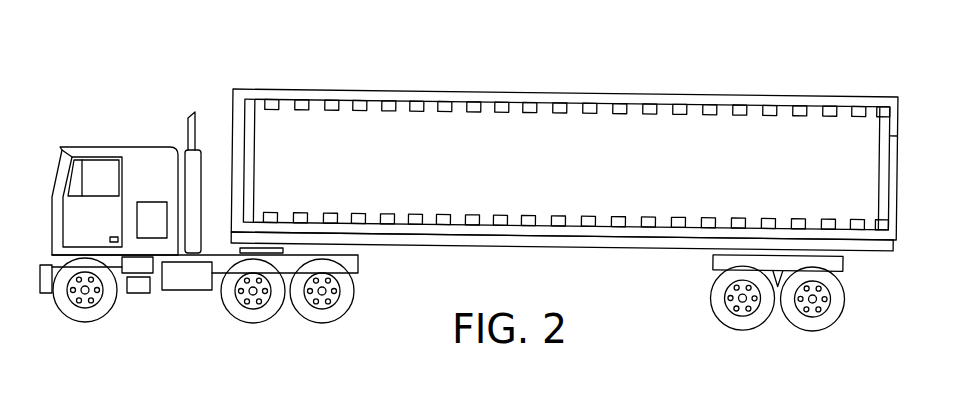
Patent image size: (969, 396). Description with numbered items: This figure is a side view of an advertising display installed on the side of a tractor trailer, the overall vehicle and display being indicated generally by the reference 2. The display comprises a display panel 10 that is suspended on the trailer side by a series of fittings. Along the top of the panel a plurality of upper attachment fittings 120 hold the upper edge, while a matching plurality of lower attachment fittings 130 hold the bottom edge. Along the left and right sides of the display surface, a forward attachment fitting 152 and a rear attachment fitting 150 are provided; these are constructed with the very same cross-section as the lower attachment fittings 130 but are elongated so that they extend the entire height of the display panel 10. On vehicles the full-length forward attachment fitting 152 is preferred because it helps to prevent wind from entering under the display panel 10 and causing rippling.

The tractor-trailer vehicle 2 is at (320, 78).
The display panel 10 is at (660, 138).
The upper attachment fittings 120 is at (448, 105).
The lower attachment fittings 130 is at (361, 223).
The rear attachment fitting 150 is at (882, 219).
The forward attachment fitting 152 is at (249, 125).